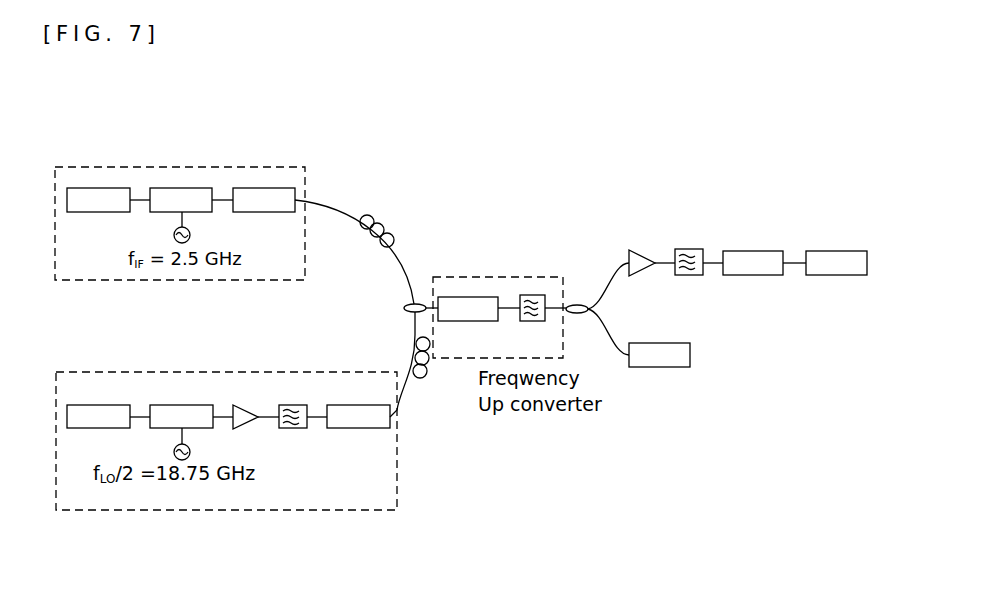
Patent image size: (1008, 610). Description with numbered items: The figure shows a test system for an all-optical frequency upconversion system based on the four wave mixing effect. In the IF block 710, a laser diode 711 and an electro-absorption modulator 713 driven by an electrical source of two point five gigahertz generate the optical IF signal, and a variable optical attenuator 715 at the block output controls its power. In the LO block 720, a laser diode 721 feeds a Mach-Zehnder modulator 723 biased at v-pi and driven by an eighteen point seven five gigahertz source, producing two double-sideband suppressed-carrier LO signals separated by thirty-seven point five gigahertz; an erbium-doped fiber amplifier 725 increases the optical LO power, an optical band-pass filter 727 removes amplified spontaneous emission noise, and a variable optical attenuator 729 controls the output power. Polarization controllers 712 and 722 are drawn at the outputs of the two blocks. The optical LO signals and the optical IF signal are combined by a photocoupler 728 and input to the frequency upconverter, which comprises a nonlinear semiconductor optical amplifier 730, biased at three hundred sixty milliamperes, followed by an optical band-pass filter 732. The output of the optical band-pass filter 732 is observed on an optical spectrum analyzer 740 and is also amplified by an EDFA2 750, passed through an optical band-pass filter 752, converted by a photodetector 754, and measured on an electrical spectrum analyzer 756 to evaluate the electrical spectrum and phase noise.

The IF block 710 is at (258, 166).
The laser diode 711 is at (97, 212).
The polarization controller 712 is at (383, 220).
The electro-absorption modulator 713 is at (186, 188).
The variable optical attenuator 715 is at (270, 212).
The LO block 720 is at (343, 372).
The laser diode 721 is at (82, 428).
The polarization controller 722 is at (418, 377).
The Mach-Zehnder modulator 723 is at (180, 405).
The erbium-doped fiber amplifier 1 725 is at (245, 429).
The optical band-pass filter 727 is at (290, 405).
The photocoupler 728 is at (416, 303).
The variable optical attenuator 729 is at (367, 428).
The semiconductor optical amplifier 730 is at (470, 297).
The optical band-pass filter 732 is at (530, 295).
The optical spectrum analyzer 740 is at (670, 367).
The EDFA2 750 is at (637, 276).
The optical band-pass filter 752 is at (688, 275).
The photodetector 754 is at (750, 275).
The electrical spectrum analyzer 756 is at (832, 275).